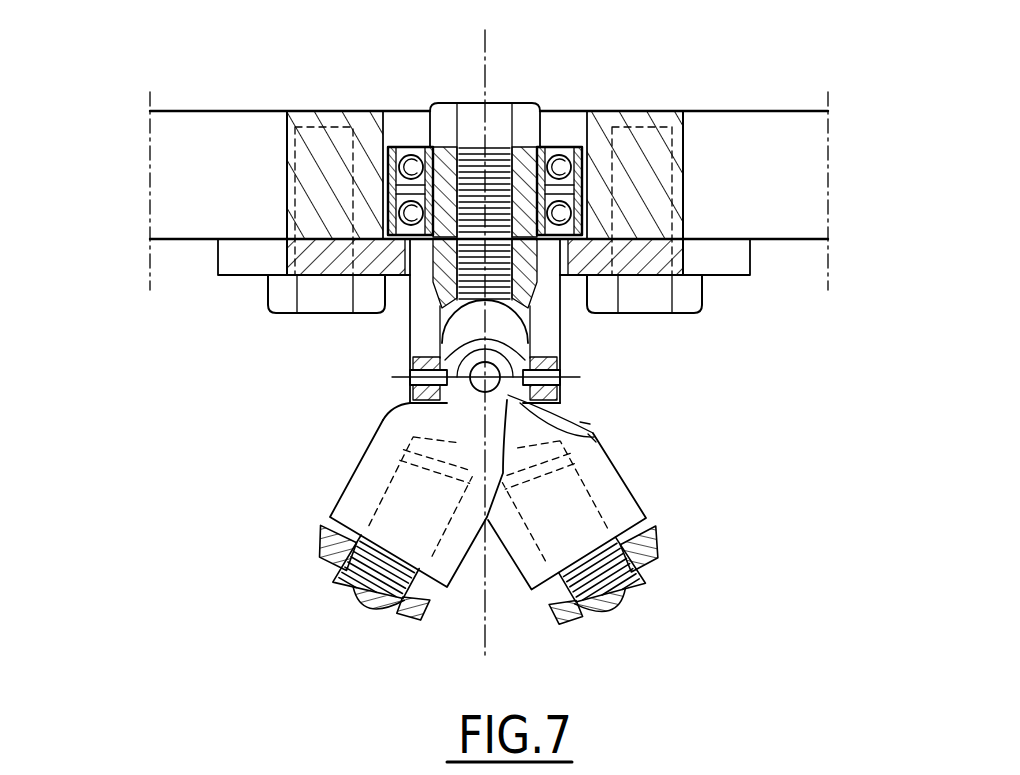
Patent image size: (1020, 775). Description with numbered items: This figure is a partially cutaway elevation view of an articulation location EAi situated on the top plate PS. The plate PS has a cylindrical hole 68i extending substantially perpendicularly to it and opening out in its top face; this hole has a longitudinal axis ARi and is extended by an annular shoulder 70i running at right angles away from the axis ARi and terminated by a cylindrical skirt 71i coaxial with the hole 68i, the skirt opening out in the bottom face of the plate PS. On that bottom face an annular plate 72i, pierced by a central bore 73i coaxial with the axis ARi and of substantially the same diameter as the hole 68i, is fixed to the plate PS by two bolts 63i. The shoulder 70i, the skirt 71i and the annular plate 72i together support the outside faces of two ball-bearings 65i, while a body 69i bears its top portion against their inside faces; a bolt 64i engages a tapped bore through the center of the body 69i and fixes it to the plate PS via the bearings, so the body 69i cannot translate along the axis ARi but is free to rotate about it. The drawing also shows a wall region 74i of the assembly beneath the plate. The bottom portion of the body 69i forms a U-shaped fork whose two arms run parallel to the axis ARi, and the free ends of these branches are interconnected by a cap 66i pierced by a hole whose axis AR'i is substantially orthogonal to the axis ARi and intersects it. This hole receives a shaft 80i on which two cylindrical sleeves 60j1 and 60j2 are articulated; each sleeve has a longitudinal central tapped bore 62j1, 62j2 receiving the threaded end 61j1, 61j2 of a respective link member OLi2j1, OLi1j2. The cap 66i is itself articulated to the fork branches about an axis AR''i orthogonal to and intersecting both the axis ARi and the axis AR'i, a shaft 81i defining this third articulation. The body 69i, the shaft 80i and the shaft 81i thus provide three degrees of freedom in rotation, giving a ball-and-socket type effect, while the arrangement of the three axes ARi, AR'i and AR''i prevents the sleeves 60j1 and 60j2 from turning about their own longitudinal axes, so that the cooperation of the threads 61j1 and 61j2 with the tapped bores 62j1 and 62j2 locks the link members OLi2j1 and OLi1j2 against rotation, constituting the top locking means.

The longitudinal axis ARi is at (487, 56).
The top plate PS is at (828, 186).
The articulation location EAi is at (760, 87).
The bolt 64i is at (532, 120).
The ball-bearings 65i is at (588, 125).
The annular plate 72i is at (232, 268).
The bolts 63i is at (692, 293).
The annular shoulder 70i is at (395, 145).
The cylindrical skirt 71i is at (398, 132).
The cylindrical hole 68i is at (416, 135).
The central bore 73i is at (409, 285).
The tubular body wall 74i is at (522, 268).
The shaft 80i is at (410, 403).
The cap 66i is at (548, 352).
The body 69i is at (423, 337).
The shaft 81i is at (560, 393).
The third axis of rotation AR''i is at (620, 431).
The second axis of rotation AR'i is at (630, 451).
The cylindrical sleeve 60j2 is at (368, 455).
The tapped bore 62j2 is at (378, 460).
The link member OLi1j2 is at (326, 548).
The threaded end 61j2 is at (395, 612).
The cylindrical sleeve 60j1 is at (634, 507).
The tapped bore 62j1 is at (632, 478).
The link member OLi2j1 is at (654, 553).
The threaded end 61j1 is at (633, 600).